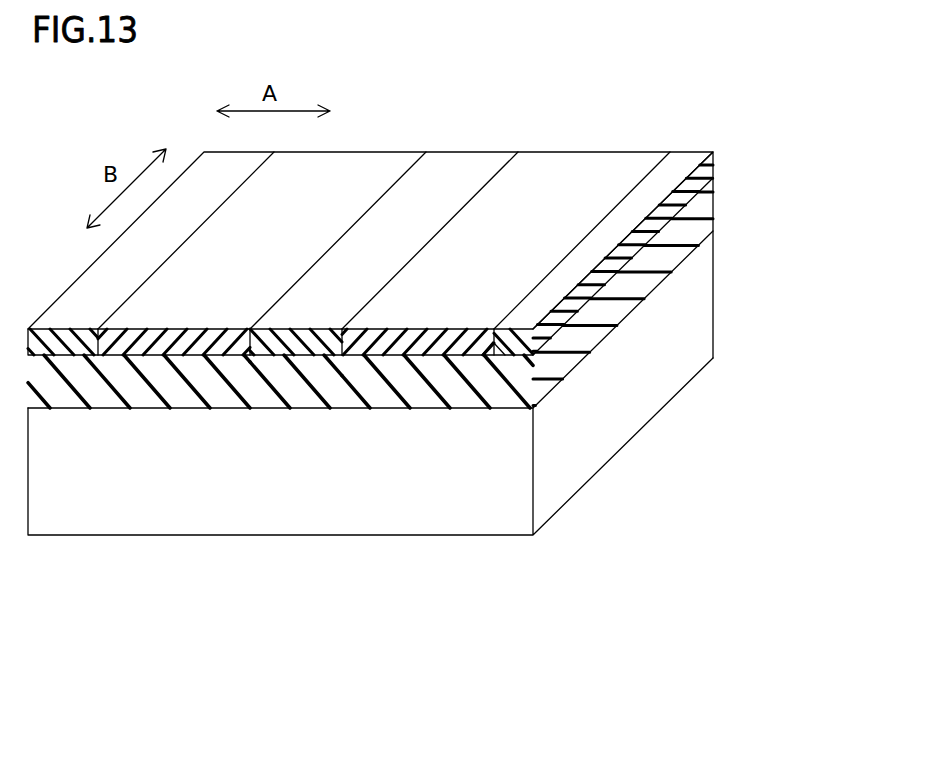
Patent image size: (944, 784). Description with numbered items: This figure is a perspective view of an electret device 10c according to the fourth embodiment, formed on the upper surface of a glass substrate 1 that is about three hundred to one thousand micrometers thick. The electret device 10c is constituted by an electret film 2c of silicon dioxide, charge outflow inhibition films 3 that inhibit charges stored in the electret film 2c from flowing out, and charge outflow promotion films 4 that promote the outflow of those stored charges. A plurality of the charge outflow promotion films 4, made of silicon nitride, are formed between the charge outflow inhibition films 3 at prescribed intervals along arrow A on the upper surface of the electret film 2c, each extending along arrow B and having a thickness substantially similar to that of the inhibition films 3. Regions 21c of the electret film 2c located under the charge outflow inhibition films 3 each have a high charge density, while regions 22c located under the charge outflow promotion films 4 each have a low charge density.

The substrate 1 is at (702, 308).
The electret film 2c is at (416, 386).
The charge outflow inhibition film 3 is at (347, 168).
The charge outflow promotion film 4 is at (467, 167).
The electret device 10c is at (805, 135).
The region of the electret film (high charge density region) 21c is at (195, 378).
The region of the electret film (low charge density region) 22c is at (317, 378).